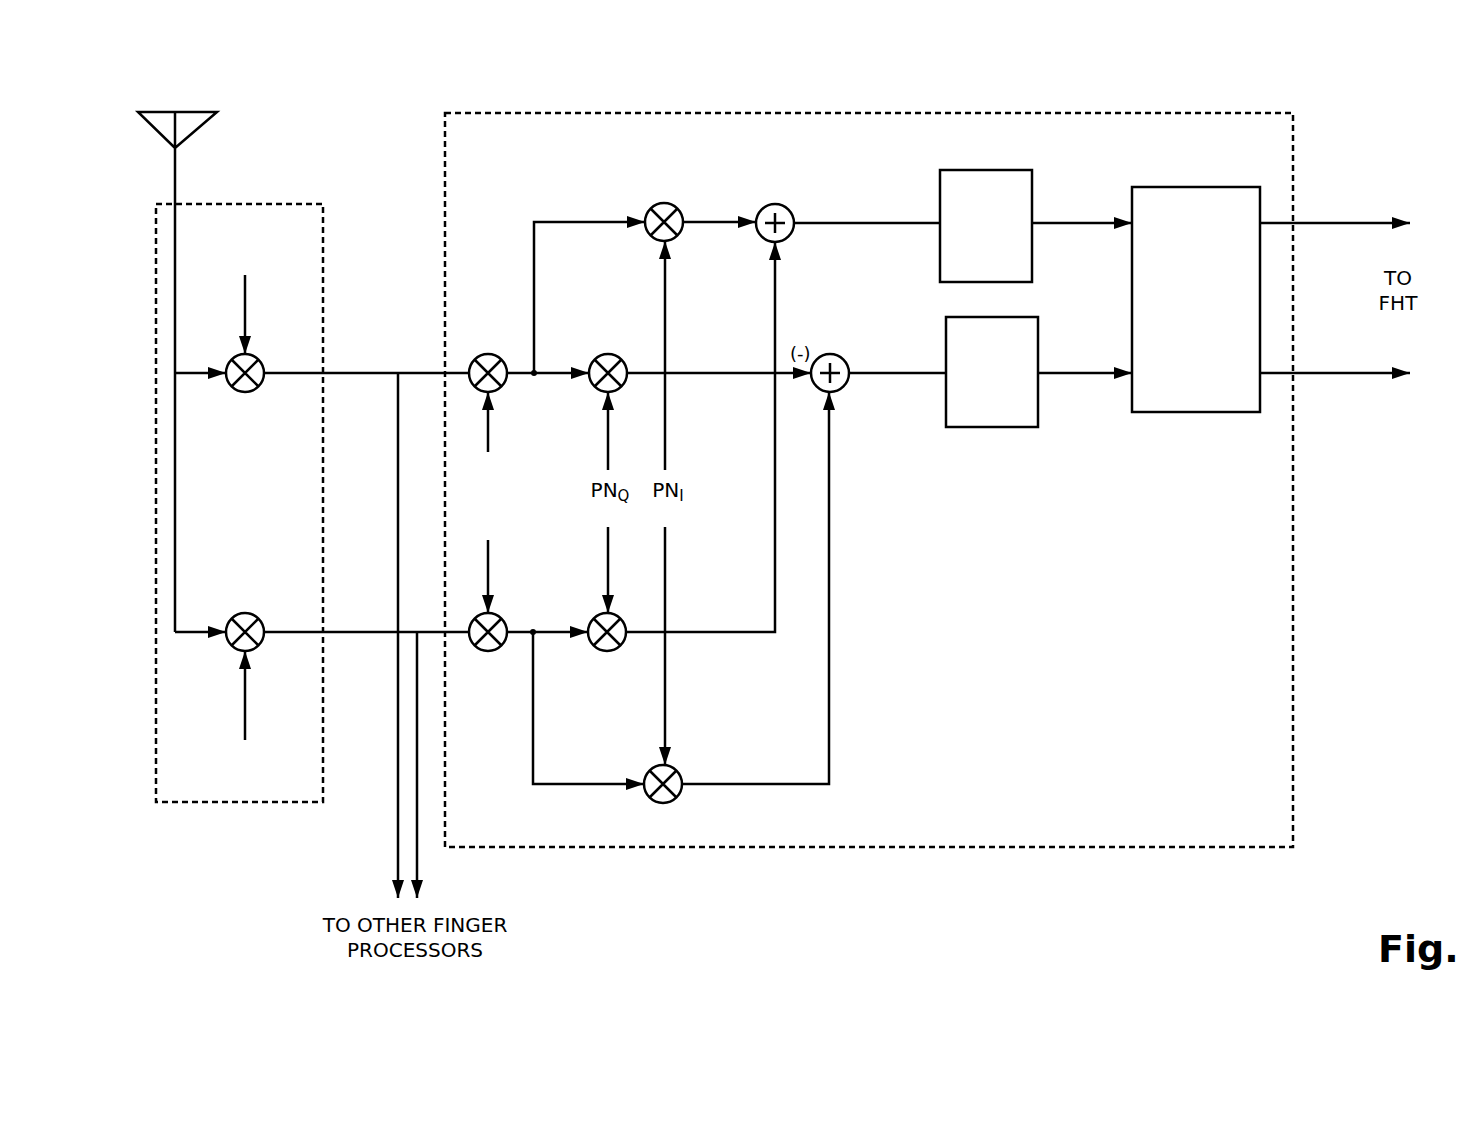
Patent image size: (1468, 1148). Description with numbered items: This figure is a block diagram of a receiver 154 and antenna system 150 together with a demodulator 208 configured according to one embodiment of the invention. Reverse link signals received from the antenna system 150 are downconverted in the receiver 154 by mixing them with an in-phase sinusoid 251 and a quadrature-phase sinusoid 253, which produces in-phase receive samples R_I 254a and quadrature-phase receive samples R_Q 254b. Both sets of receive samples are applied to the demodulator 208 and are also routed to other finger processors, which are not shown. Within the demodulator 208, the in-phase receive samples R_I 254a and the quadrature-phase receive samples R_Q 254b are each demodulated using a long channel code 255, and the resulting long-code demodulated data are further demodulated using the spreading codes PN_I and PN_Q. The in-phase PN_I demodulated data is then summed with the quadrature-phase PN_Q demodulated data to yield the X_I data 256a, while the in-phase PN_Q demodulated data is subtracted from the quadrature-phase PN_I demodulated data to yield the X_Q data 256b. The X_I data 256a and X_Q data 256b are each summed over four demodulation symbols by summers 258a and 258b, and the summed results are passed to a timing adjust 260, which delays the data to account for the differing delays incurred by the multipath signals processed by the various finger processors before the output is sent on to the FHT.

The antenna system 150 is at (206, 112).
The receiver 154 is at (238, 204).
The demodulator 208 is at (742, 112).
The in-phase sinusoid 251 is at (248, 298).
The quadrature-phase sinusoid 253 is at (247, 700).
The in-phase receive samples R_I 254a is at (378, 376).
The quadrature-phase receive samples R_Q 254b is at (378, 635).
The long channel code 255 is at (489, 440).
The X_I data 256a is at (932, 222).
The X_Q data 256b is at (918, 378).
The summer 258a is at (982, 170).
The summer 258b is at (1010, 427).
The timing adjust 260 is at (1132, 290).